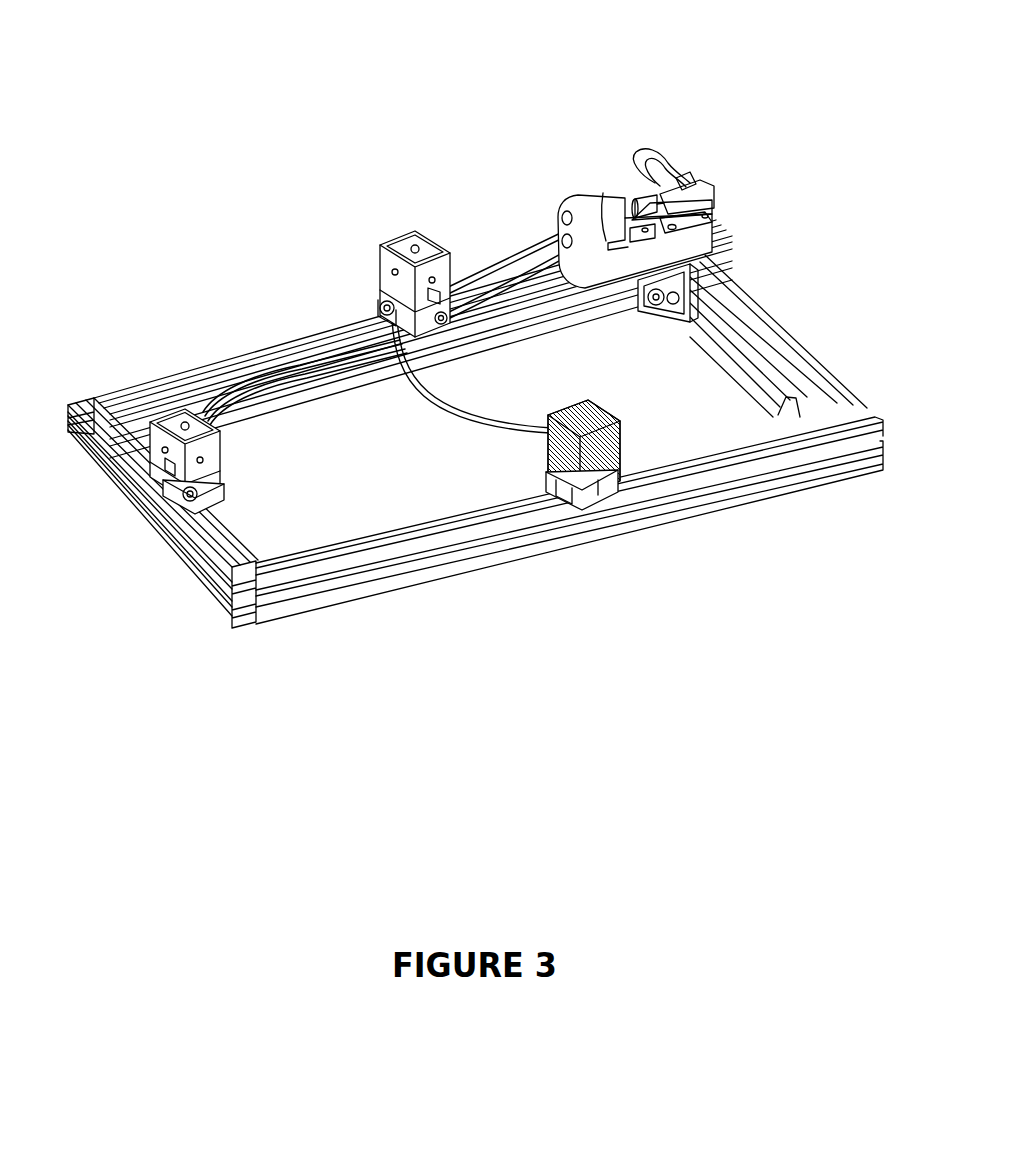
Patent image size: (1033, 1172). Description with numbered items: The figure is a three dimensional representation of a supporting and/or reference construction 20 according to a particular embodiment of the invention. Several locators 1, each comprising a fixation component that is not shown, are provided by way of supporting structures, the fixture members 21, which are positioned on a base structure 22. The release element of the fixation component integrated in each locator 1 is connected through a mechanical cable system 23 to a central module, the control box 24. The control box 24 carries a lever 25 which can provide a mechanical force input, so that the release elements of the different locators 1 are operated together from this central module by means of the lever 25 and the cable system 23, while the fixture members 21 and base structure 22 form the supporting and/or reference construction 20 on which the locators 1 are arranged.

The locator 1 is at (560, 427).
The supporting and/or reference construction 20 is at (132, 292).
The fixture members 21 is at (582, 499).
The base structure 22 is at (690, 472).
The cable system 23 is at (510, 230).
The control box 24 is at (587, 205).
The lever 25 is at (657, 168).